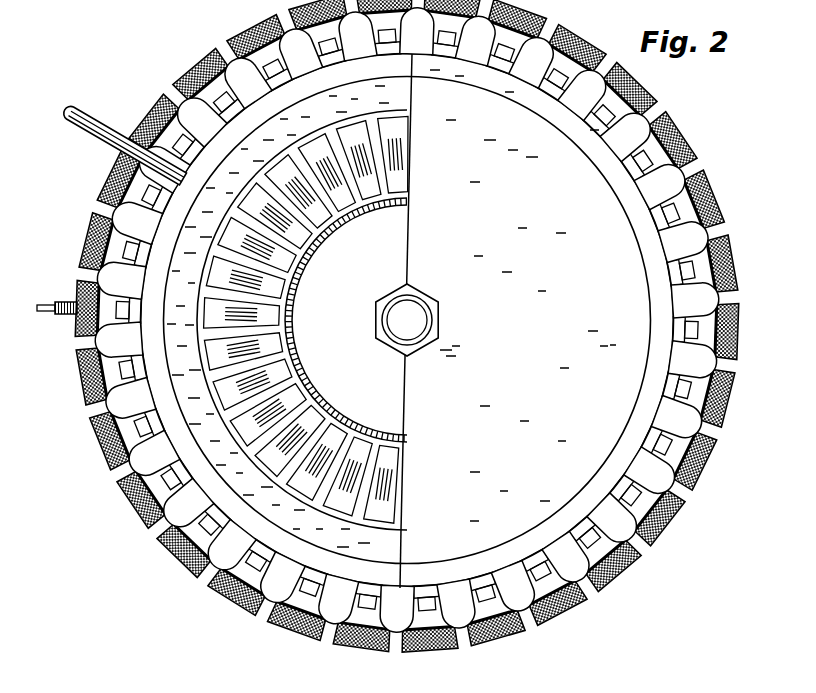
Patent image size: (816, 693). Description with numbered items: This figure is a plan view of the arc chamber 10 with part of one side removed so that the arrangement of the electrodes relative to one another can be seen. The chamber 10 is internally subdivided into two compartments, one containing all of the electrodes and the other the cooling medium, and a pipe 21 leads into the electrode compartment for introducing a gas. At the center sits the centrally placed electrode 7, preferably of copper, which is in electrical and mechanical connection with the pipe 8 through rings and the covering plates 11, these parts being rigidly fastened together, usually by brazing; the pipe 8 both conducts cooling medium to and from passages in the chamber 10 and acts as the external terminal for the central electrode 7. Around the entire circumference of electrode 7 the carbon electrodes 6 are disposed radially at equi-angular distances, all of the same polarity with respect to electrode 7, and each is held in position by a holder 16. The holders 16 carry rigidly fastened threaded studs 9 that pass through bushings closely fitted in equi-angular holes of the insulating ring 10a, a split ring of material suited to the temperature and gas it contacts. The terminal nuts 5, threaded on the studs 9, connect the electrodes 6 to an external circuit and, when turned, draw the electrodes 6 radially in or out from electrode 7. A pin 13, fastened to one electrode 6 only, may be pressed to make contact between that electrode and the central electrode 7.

The terminal nuts 5 is at (88, 428).
The electrodes 6 is at (398, 208).
The centrally placed electrode 7 is at (299, 321).
The pipe 8 is at (418, 320).
The threaded studs 9 is at (66, 316).
The chamber 10 is at (310, 396).
The insulating ring 10a is at (396, 567).
The covering plates 11 is at (418, 394).
The pin 13 is at (42, 304).
The holders 16 is at (316, 143).
The pipe 21 is at (101, 118).